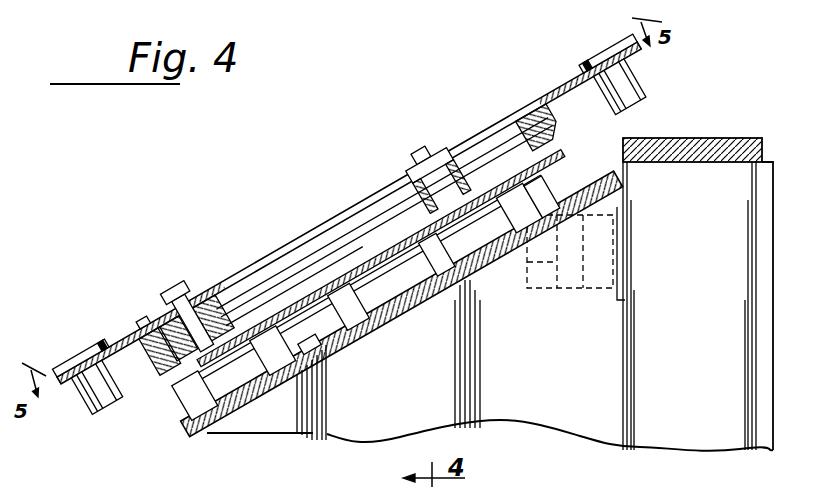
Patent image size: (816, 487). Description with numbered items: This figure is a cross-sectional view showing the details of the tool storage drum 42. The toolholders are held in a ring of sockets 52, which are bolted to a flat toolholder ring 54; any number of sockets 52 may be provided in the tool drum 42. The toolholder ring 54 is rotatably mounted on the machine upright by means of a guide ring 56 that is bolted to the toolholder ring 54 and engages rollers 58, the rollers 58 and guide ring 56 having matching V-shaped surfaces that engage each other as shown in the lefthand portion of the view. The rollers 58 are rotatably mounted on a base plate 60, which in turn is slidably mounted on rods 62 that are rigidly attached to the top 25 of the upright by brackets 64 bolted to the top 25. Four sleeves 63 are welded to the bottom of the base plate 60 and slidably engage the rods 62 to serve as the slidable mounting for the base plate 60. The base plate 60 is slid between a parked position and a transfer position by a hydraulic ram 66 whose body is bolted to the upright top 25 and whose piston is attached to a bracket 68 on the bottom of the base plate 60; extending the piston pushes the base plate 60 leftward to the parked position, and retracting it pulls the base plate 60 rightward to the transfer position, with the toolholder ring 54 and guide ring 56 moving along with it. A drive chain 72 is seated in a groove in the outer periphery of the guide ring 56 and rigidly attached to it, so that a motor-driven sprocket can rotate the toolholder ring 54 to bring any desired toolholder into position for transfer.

The top of upright 25 is at (374, 330).
The tool storage drum 42 is at (323, 214).
The sockets 52 is at (624, 86).
The toolholder ring 54 is at (566, 84).
The guide ring 56 is at (551, 132).
The rollers 58 is at (206, 292).
The base plate 60 is at (354, 266).
The rods 62 is at (620, 193).
The sleeves 63 is at (285, 358).
The brackets 64 is at (178, 398).
The hydraulic ram 66 is at (387, 288).
The bracket 68 is at (313, 354).
The drive chain 72 is at (150, 357).